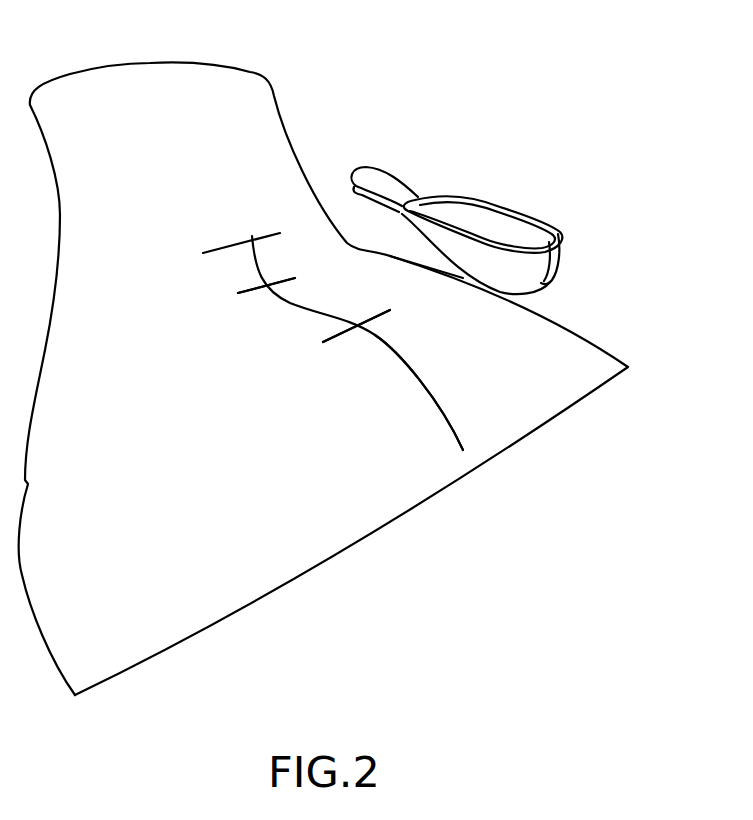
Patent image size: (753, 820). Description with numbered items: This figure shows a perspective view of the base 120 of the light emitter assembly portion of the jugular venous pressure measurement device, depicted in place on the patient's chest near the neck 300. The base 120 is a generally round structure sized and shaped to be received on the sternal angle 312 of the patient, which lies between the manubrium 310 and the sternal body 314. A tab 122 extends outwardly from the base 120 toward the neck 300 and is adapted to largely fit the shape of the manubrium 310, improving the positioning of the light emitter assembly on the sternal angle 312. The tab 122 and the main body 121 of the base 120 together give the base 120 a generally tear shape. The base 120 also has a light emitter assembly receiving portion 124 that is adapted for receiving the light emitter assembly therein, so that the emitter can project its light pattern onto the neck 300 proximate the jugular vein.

The neck 300 is at (280, 109).
The base 120 is at (525, 214).
The main body 121 is at (564, 255).
The tab 122 is at (349, 166).
The light emitter assembly receiving portion 124 is at (526, 247).
The manubrium 310 is at (262, 298).
The sternal angle 312 is at (384, 325).
The sternal body 314 is at (394, 368).